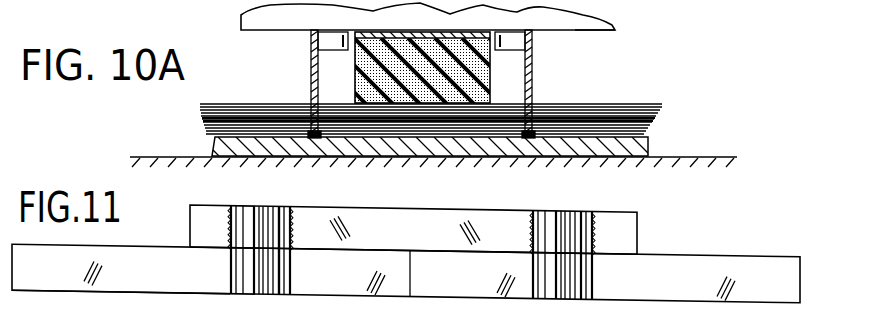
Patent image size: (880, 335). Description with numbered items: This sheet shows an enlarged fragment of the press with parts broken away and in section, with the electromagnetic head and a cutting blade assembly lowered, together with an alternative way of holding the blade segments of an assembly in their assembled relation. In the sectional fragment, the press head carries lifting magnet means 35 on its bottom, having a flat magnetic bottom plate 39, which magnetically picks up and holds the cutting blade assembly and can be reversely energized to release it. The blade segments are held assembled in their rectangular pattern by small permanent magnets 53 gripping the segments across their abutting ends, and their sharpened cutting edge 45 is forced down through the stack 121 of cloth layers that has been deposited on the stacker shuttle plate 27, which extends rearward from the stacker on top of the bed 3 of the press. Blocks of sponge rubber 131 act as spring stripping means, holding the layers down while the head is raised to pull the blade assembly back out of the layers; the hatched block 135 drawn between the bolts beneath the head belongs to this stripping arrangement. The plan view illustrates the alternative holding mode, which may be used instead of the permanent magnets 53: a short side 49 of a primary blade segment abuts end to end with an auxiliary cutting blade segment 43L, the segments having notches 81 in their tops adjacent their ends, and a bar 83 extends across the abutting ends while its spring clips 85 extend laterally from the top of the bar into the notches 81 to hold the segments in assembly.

In FIG. 10A, the bed 3 is at (735, 157).
In FIG. 10A, the shuttle plate 27 is at (650, 150).
In FIG. 10A, the lifting magnet means 35 is at (247, 18).
In FIG. 10A, the magnetic bottom plate 39 is at (590, 32).
In FIG. 10A, the cutting edge 45 is at (323, 140).
In FIG. 10A, the permanent magnets 53 is at (318, 42).
In FIG. 10A, the stack 121 is at (652, 104).
In FIG. 10A, the blocks of sponge rubber 131 is at (355, 68).
In FIG. 10A, the insulating block 135 is at (460, 27).
In FIG. 11, the auxiliary cutting blade segment 43L is at (662, 292).
In FIG. 11, the short sides 49 is at (180, 290).
In FIG. 11, the notches 81 is at (284, 276).
In FIG. 11, the bars 83 is at (425, 214).
In FIG. 11, the spring clips 85 is at (248, 290).